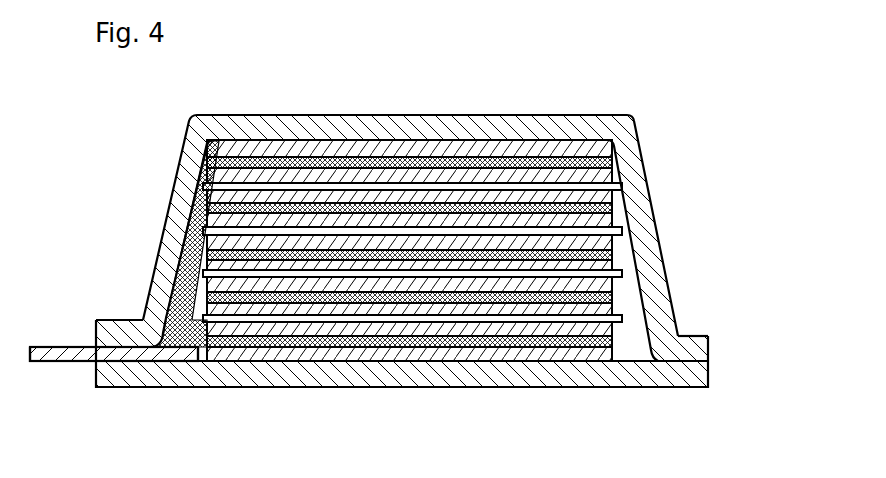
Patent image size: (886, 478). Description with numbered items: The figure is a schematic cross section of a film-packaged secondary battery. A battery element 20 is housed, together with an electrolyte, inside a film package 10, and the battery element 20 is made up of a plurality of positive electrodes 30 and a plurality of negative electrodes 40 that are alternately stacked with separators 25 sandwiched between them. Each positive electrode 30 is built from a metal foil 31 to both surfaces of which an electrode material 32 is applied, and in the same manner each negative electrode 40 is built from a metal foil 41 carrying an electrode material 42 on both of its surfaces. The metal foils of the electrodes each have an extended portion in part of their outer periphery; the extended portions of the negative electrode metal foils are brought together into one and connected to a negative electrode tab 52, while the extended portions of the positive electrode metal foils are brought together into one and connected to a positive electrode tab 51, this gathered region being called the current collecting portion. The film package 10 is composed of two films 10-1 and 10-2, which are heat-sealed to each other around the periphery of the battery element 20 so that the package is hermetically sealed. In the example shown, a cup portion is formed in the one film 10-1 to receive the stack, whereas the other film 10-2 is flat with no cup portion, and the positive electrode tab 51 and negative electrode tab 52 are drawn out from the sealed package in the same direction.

The film package 10 is at (452, 365).
The film 10-1 is at (698, 337).
The film 10-2 is at (428, 379).
The battery element 20 is at (290, 358).
The separator 25 is at (567, 277).
The positive electrode 30 is at (212, 203).
The metal foil 31 is at (397, 192).
The electrode material 32 is at (430, 206).
The negative electrode 40 is at (463, 261).
The metal foil 41 is at (490, 188).
The electrode material 42 is at (538, 175).
The positive electrode tab 51 is at (62, 348).
The negative electrode tab 52 is at (114, 354).